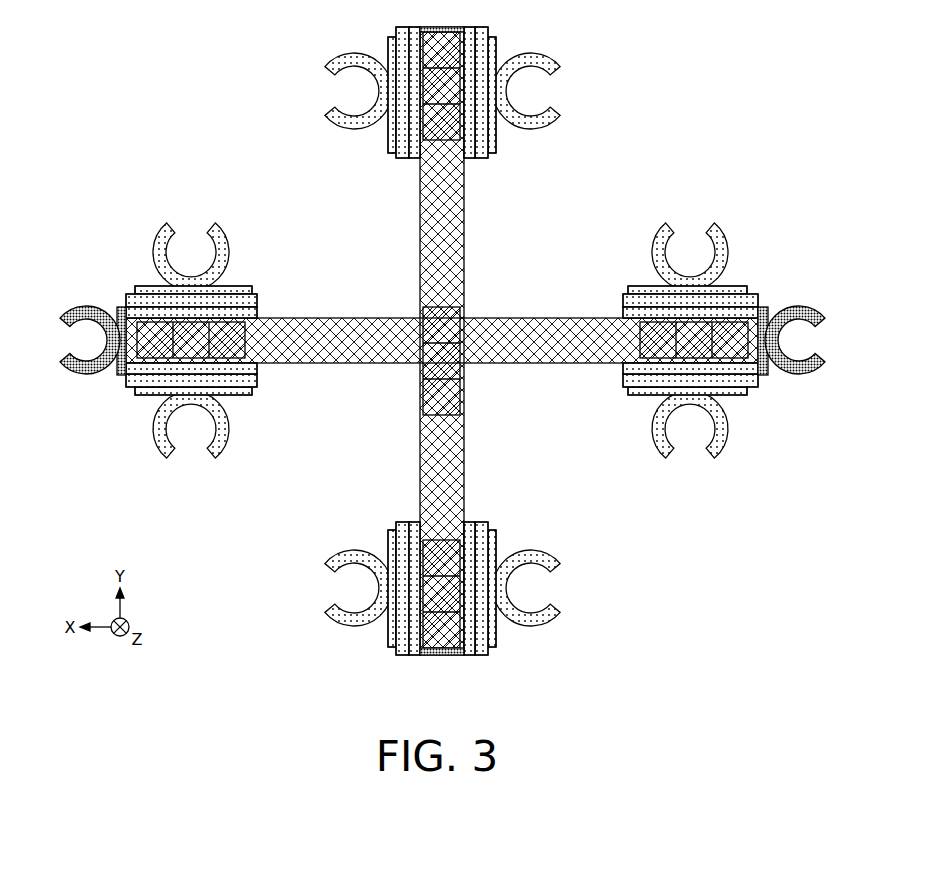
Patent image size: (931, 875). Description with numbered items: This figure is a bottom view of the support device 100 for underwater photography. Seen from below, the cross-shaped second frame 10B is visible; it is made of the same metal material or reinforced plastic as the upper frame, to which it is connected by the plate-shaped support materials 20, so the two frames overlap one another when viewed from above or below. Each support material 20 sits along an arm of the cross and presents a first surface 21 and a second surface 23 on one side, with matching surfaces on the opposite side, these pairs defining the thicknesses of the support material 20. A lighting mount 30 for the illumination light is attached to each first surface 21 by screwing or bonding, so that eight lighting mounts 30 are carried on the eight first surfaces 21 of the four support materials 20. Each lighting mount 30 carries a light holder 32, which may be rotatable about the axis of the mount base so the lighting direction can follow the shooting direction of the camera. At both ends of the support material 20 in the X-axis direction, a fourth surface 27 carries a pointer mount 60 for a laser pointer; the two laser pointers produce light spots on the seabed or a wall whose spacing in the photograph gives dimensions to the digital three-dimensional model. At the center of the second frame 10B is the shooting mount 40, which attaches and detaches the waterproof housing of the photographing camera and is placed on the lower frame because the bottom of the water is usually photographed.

The vibration device / actuator assembly 100 is at (134, 135).
The second frame 10B is at (437, 245).
The support material 20 is at (402, 28).
The first surface 21 is at (393, 153).
The second surface 23 is at (411, 157).
The fourth surface 27 is at (477, 28).
The lighting mount 30 is at (388, 46).
The light holder 32 is at (557, 58).
The shooting mount 40 is at (422, 313).
The pointer mount 60 is at (75, 318).